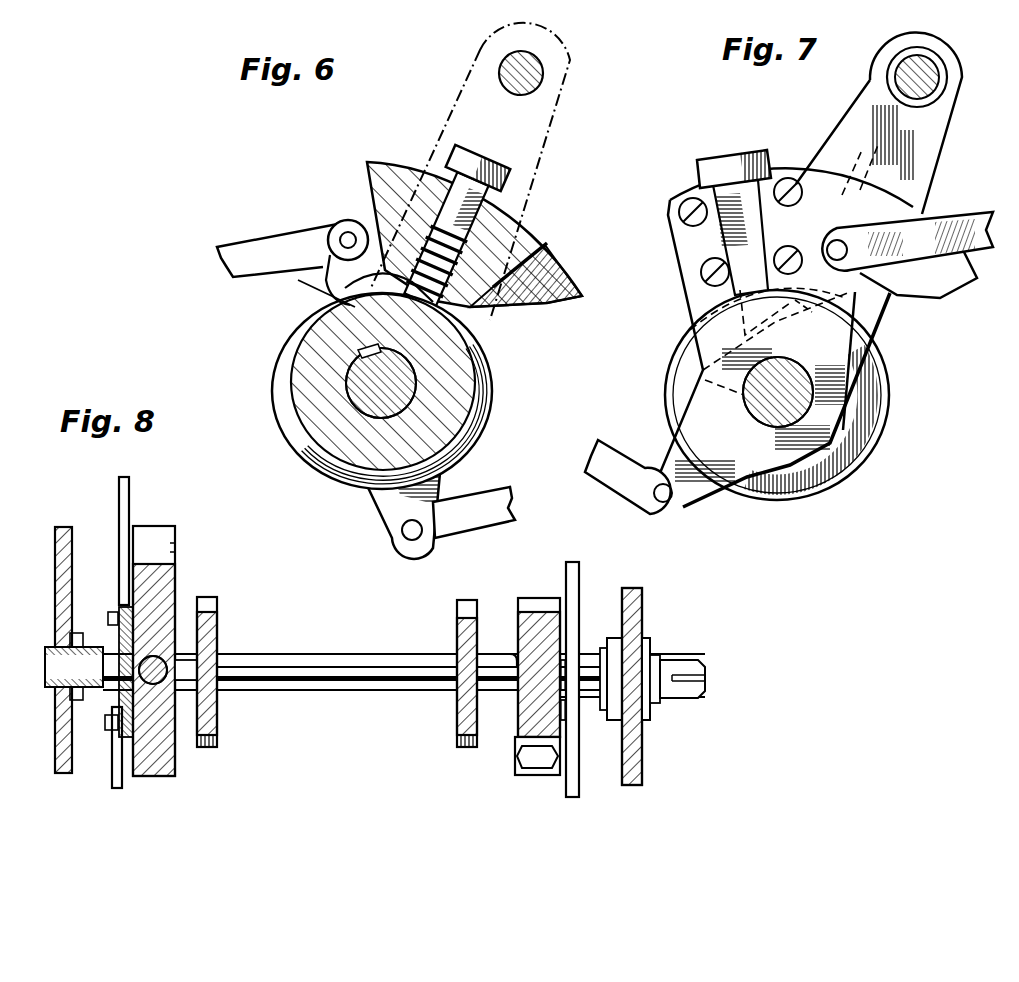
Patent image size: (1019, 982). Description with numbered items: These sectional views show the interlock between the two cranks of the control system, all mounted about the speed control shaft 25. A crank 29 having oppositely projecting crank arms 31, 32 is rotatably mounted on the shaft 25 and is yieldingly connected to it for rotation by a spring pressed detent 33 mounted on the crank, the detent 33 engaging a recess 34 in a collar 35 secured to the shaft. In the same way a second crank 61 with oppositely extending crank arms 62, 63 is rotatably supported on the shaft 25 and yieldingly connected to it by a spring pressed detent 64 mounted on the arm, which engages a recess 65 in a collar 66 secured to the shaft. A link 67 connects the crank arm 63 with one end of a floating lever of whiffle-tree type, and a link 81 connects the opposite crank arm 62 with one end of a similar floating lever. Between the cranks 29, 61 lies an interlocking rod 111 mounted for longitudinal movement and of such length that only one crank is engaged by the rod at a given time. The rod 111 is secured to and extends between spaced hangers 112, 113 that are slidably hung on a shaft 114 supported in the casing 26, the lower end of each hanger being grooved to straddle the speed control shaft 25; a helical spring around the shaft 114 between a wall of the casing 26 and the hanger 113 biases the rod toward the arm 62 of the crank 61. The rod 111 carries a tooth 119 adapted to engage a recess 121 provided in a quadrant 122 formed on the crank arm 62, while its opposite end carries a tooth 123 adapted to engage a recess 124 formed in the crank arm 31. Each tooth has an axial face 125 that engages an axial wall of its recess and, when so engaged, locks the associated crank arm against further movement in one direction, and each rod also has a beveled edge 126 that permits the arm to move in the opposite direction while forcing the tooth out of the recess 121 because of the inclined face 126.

In FIG. 6, the speed control shaft 25 is at (413, 373).
In FIG. 7, the speed control shaft 25 is at (767, 427).
In FIG. 8, the speed control shaft 25 is at (398, 657).
In FIG. 8, the casing 26 is at (642, 612).
In FIG. 7, the crank 29 is at (700, 410).
In FIG. 7, the crank arm 31 is at (880, 306).
In FIG. 8, the crank arm 31 is at (520, 615).
In FIG. 7, the crank arm 32 is at (700, 497).
In FIG. 7, the spring pressed detent 33 is at (743, 242).
In FIG. 7, the recess 34 is at (812, 315).
In FIG. 7, the collar 35 is at (870, 404).
In FIG. 6, the second crank 61 is at (315, 407).
In FIG. 6, the crank arm 62 is at (328, 280).
In FIG. 6, the crank arm 63 is at (382, 507).
In FIG. 6, the spring pressed detent 64 is at (457, 230).
In FIG. 6, the recess 65 is at (328, 303).
In FIG. 6, the collar 66 is at (462, 383).
In FIG. 6, the link 67 is at (478, 500).
In FIG. 6, the link 81 is at (250, 243).
In FIG. 7, the interlocking rod 111 is at (874, 170).
In FIG. 8, the interlocking rod 111 is at (303, 668).
In FIG. 6, the hanger 112 is at (548, 118).
In FIG. 8, the hanger 112 is at (216, 622).
In FIG. 7, the hanger 113 is at (938, 128).
In FIG. 8, the hanger 113 is at (458, 625).
In FIG. 6, the shaft 114 is at (545, 73).
In FIG. 7, the shaft 114 is at (932, 72).
In FIG. 8, the tooth 119 is at (180, 672).
In FIG. 8, the recess 121 is at (172, 548).
In FIG. 8, the quadrant 122 is at (150, 528).
In FIG. 8, the tooth 123 is at (520, 690).
In FIG. 8, the recess 124 is at (552, 665).
In FIG. 8, the axial face 125 is at (530, 650).
In FIG. 8, the beveled edge 126 is at (190, 678).